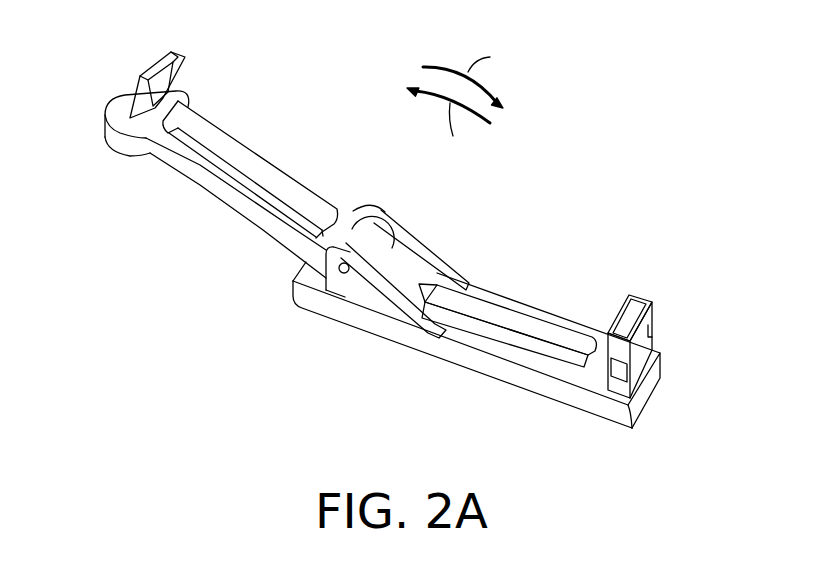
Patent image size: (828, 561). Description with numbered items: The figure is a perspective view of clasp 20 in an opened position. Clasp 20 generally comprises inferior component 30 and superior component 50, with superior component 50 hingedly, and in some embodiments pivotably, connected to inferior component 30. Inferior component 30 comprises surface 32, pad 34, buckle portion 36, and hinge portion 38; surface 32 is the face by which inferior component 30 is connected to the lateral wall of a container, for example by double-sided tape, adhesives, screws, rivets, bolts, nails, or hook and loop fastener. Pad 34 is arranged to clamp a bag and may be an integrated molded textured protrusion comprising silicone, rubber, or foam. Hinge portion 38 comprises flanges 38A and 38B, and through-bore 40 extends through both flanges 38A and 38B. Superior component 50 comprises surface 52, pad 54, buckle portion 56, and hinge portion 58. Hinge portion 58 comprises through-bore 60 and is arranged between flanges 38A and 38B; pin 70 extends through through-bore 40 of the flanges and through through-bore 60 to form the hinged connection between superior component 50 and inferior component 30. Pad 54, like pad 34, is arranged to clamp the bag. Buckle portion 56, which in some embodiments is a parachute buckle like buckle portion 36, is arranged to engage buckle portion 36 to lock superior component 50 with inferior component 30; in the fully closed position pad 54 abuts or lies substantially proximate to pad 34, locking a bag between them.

The clasp 20 is at (369, 248).
The inferior component 30 is at (476, 369).
The surface 32 is at (463, 372).
The pad 34 is at (512, 312).
The buckle portion 36 is at (643, 300).
The hinge portion 38 is at (326, 302).
The flange 38A is at (377, 295).
The flange 38B is at (410, 241).
The through-bore 40 is at (266, 310).
The superior component 50 is at (190, 150).
The surface 52 is at (195, 178).
The pad 54 is at (240, 153).
The buckle portion 56 is at (138, 84).
The hinge portion 58 is at (352, 197).
The through-bore 60 is at (384, 200).
The pin 70 is at (338, 268).